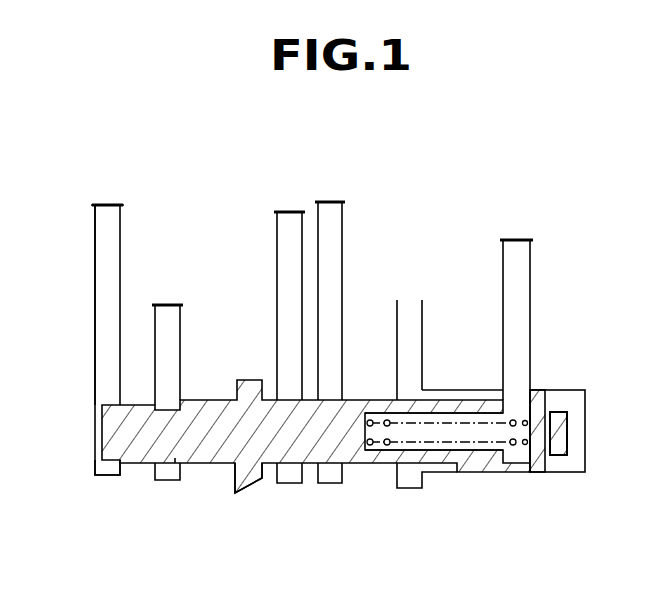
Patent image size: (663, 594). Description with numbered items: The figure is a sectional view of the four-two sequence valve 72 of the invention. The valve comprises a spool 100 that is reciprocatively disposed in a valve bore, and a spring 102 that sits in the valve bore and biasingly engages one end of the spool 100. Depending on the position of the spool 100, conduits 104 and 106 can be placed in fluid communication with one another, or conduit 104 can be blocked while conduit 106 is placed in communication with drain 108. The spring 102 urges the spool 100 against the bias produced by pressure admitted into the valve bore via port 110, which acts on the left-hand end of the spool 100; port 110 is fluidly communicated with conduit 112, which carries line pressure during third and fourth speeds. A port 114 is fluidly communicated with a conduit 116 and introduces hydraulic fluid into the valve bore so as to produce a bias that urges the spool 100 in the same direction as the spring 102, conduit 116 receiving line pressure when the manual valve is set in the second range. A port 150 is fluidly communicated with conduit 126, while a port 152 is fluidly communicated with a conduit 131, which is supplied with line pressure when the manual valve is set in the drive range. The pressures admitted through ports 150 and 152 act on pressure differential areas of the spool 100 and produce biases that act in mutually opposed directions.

The sequence valve 72 is at (86, 408).
The spool 100 is at (198, 466).
The spring 102 is at (527, 471).
The conduit 104 is at (346, 232).
The conduit 106 is at (277, 258).
The drain 108 is at (244, 494).
The port 110 is at (105, 476).
The conduit 112 is at (95, 296).
The port 114 is at (518, 383).
The conduit 116 is at (530, 262).
The conduit 126 is at (180, 336).
The conduit 131 is at (426, 331).
The port 150 is at (161, 481).
The port 152 is at (406, 489).